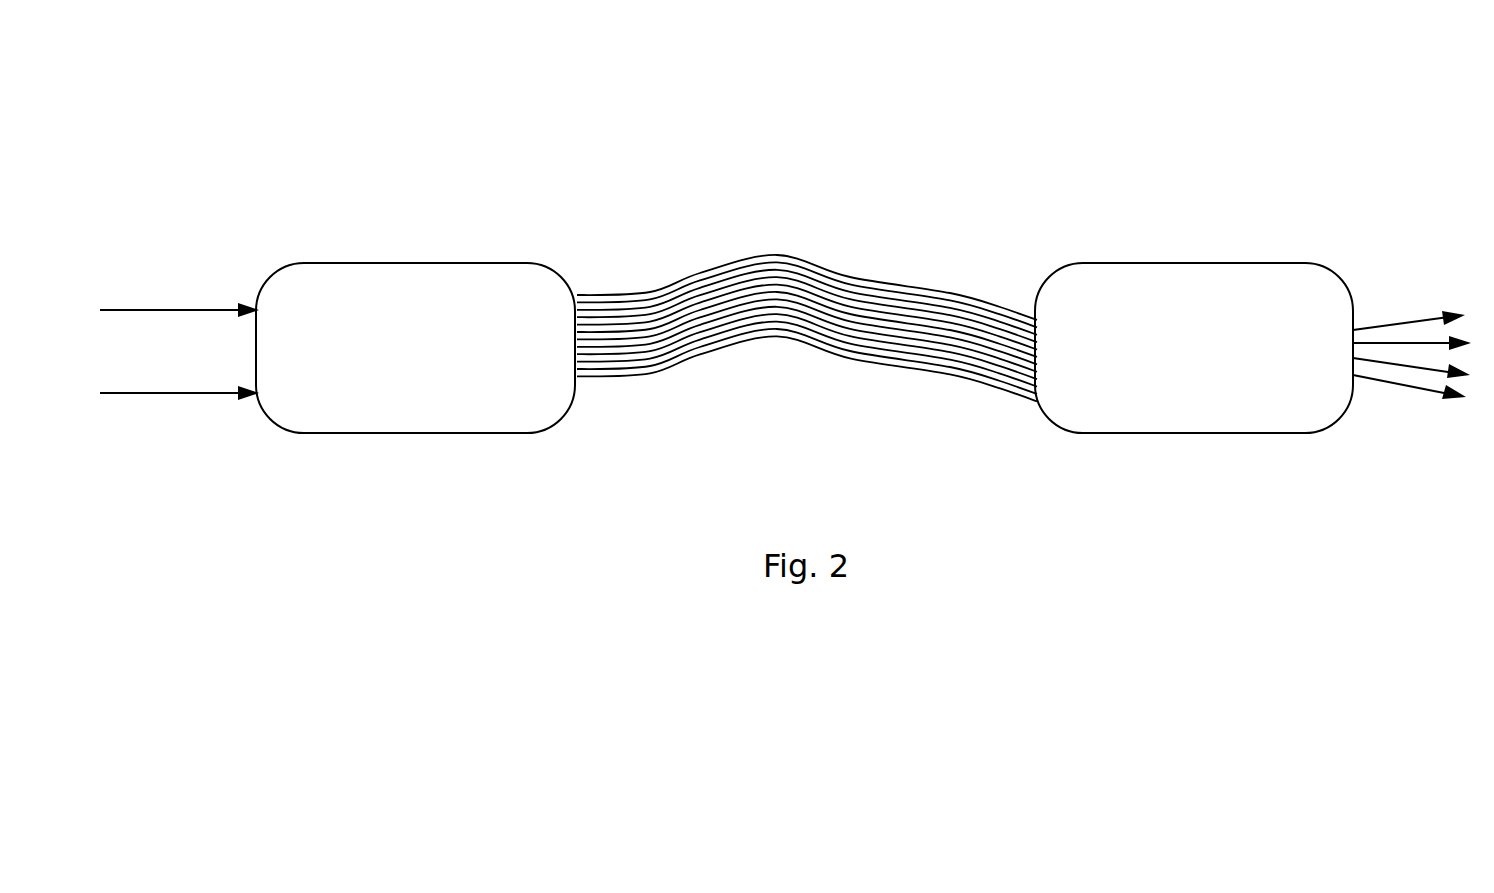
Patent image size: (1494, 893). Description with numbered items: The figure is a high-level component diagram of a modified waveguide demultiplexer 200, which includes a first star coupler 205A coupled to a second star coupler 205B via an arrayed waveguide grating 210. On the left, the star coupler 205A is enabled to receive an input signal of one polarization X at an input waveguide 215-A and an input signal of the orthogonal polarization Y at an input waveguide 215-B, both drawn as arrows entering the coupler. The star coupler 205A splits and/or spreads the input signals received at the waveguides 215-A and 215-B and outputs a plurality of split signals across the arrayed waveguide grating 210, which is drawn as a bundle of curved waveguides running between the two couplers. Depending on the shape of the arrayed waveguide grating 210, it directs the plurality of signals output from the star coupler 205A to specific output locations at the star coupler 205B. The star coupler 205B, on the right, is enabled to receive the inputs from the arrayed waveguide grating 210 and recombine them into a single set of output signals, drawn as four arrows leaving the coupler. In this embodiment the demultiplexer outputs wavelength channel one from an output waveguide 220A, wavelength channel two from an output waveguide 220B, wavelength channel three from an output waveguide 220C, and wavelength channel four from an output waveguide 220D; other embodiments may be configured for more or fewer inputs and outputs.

The modified waveguide demultiplexer 200 is at (275, 116).
The star coupler 205A is at (415, 348).
The star coupler 205B is at (1194, 348).
The arrayed waveguide grating 210 is at (1000, 252).
The input waveguide 215-A is at (188, 310).
The input waveguide 215-B is at (188, 393).
The output waveguide 220A is at (1378, 324).
The output waveguide 220B is at (1413, 340).
The output waveguide 220C is at (1379, 364).
The output waveguide 220D is at (1420, 392).